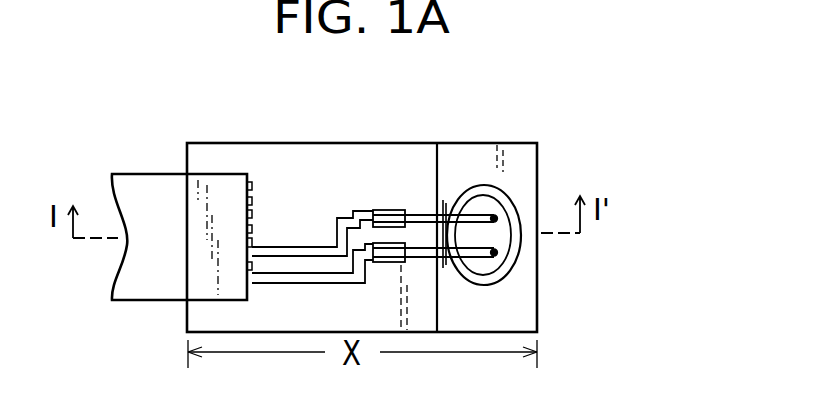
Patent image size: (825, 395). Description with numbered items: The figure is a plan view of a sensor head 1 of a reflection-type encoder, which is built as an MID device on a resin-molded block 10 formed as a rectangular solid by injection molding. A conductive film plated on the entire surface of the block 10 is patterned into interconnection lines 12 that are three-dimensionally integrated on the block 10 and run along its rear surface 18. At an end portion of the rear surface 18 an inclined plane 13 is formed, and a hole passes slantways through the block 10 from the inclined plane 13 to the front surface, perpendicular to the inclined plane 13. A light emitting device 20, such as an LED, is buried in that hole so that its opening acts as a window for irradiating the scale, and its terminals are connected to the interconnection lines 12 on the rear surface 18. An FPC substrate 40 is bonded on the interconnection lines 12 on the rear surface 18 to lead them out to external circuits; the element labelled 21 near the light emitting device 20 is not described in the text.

The sensor head 1 is at (494, 133).
The resin-molded block 10 is at (273, 167).
The interconnection lines 12 is at (306, 246).
The inclined plane 13 is at (522, 156).
The rear surface 18 is at (343, 160).
The light emitting device 20 is at (500, 232).
The light emitting / receiving element 21 is at (421, 217).
The FPC substrate 40 is at (153, 190).